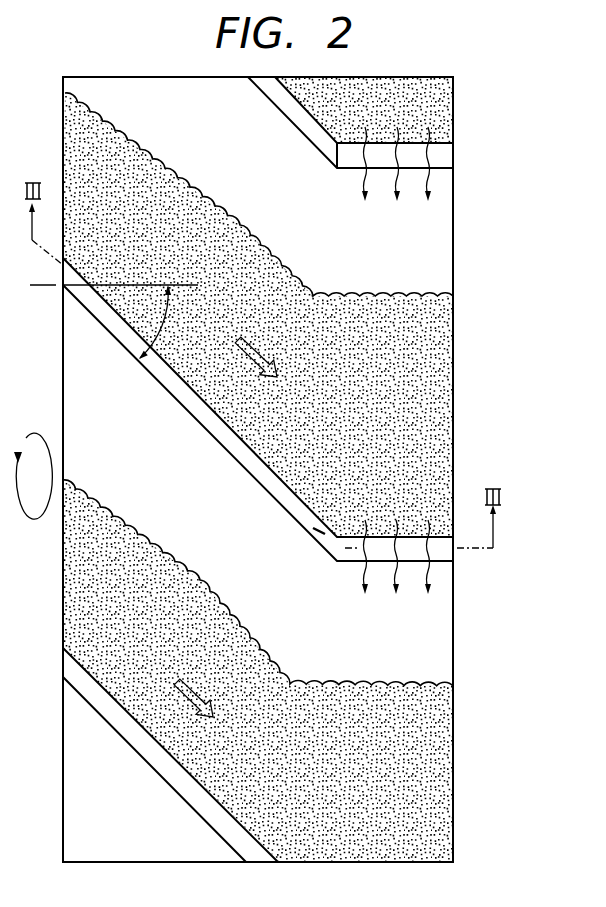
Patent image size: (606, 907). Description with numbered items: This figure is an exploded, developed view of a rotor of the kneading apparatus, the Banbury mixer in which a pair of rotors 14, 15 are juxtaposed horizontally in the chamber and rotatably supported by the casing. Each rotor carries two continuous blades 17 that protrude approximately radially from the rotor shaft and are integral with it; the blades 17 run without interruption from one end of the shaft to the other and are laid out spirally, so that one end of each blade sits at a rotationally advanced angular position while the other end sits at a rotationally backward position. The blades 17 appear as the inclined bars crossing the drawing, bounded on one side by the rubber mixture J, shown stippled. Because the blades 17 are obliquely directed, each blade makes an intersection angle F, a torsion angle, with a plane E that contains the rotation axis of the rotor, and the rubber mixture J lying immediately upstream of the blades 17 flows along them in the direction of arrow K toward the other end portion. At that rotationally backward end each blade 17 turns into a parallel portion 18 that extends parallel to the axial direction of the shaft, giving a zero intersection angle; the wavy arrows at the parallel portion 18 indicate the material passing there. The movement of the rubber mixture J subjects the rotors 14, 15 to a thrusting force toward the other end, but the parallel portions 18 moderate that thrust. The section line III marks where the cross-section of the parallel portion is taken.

The rotor 14 is at (306, 469).
The rotor 15 is at (458, 362).
The continuous blade 17 is at (290, 126).
The parallel portion 18 is at (379, 157).
The rubber mixture J is at (442, 109).
The arrow indicating flow direction K is at (219, 519).
The plane containing the rotation axis E is at (198, 285).
The intersection angle F is at (157, 322).
The section line III- III is at (263, 365).